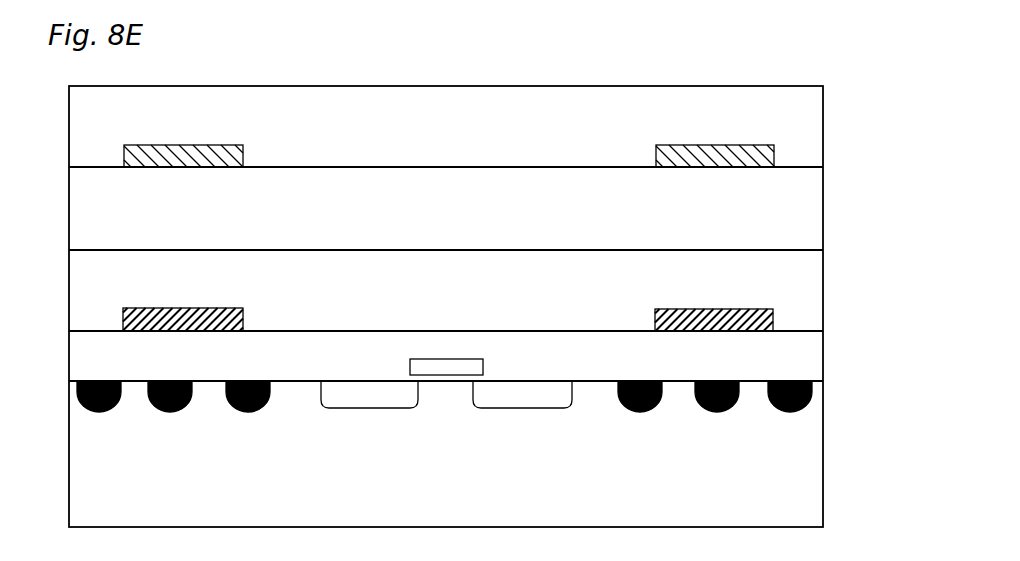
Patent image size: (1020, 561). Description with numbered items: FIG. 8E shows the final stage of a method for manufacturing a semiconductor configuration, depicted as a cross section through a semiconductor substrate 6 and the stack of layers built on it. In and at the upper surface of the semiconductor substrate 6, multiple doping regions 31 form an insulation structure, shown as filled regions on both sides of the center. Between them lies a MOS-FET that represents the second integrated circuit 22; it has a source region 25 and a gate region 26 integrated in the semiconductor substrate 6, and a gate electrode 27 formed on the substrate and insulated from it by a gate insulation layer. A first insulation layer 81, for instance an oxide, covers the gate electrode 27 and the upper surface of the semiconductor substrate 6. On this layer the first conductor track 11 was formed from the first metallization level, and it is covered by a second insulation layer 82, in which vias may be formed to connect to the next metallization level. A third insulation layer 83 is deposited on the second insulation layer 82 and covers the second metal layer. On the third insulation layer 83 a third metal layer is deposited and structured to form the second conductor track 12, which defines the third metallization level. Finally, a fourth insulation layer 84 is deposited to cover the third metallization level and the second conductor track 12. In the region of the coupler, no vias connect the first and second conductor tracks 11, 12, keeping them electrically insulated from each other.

The semiconductor substrate 6 is at (818, 472).
The first conductor track 11 is at (244, 320).
The second conductor track 12 is at (244, 156).
The second integrated circuit 22 is at (445, 411).
The source region 25 is at (360, 400).
The gate region 26 is at (528, 402).
The gate electrode 27 is at (484, 365).
The doping regions 31 is at (100, 411).
The first insulation layer 81 is at (820, 356).
The second insulation layer 82 is at (820, 288).
The third insulation layer 83 is at (820, 210).
The fourth insulation layer 84 is at (820, 129).